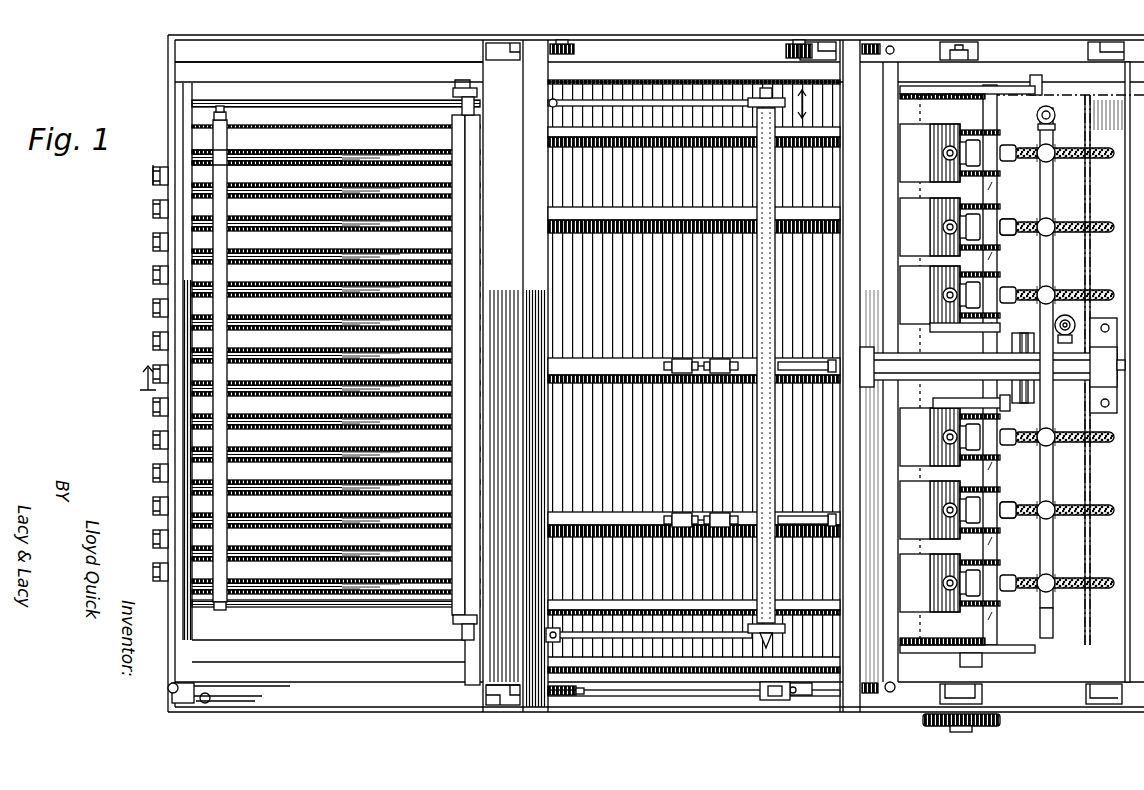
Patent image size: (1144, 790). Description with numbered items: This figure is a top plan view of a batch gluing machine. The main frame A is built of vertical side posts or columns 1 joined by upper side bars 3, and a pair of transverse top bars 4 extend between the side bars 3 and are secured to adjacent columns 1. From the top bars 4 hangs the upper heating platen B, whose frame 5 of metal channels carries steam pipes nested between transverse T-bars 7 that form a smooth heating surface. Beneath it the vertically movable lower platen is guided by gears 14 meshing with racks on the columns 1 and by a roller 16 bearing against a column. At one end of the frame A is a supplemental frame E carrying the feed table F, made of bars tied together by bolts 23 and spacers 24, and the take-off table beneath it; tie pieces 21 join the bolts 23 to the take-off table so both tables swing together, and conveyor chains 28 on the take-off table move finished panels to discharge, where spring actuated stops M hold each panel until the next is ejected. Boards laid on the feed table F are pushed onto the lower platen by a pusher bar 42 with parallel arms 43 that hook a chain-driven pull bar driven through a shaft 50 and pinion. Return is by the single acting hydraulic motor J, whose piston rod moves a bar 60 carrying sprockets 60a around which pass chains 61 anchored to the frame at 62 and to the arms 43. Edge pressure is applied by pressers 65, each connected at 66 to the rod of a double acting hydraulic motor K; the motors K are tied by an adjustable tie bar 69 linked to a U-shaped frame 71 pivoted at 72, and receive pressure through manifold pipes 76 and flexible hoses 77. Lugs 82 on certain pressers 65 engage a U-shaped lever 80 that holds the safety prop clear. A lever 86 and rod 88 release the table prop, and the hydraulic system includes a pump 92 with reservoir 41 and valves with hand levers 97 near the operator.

The vertical side posts or columns 1 is at (491, 45).
The upper side bars 3 is at (740, 62).
The transverse top bars 4 is at (562, 42).
The frame 5 is at (512, 288).
The T-bars 7 is at (713, 90).
The gears 14 is at (585, 692).
The roller 16 is at (770, 50).
The tie pieces 21 is at (468, 90).
The bolts 23 is at (222, 115).
The spacers 24 is at (200, 268).
The conveyor chains 28 is at (424, 590).
The reservoir 41 is at (1080, 142).
The pusher bar 42 is at (158, 178).
The pusher arms 43 is at (348, 100).
The shaft 50 is at (963, 730).
The bar 60 is at (757, 300).
The sprockets 60a is at (776, 687).
The chains 61 is at (675, 90).
The chain anchor 62 is at (555, 100).
The pressers 65 is at (925, 137).
The presser connection 66 is at (948, 155).
The tie bar 69 is at (1005, 265).
The U-shaped frame 71 is at (1003, 88).
The pivot 72 is at (1033, 80).
The manifold pipes 76 is at (1052, 212).
The flexible hoses 77 is at (1097, 160).
The U-shaped lever 80 is at (1036, 342).
The lugs 82 is at (927, 405).
The lever 86 is at (780, 682).
The rod 88 is at (653, 700).
The pump 92 is at (1082, 524).
The hand lever 97 is at (174, 704).
The frame of the machine A is at (480, 665).
The upper heating platen or radiator B is at (633, 125).
The supplemental frame E is at (425, 62).
The laying up or feed table F is at (315, 127).
The hydraulic motor J is at (1117, 352).
The hydraulic motors K is at (1044, 165).
The spring actuated stops M is at (150, 405).